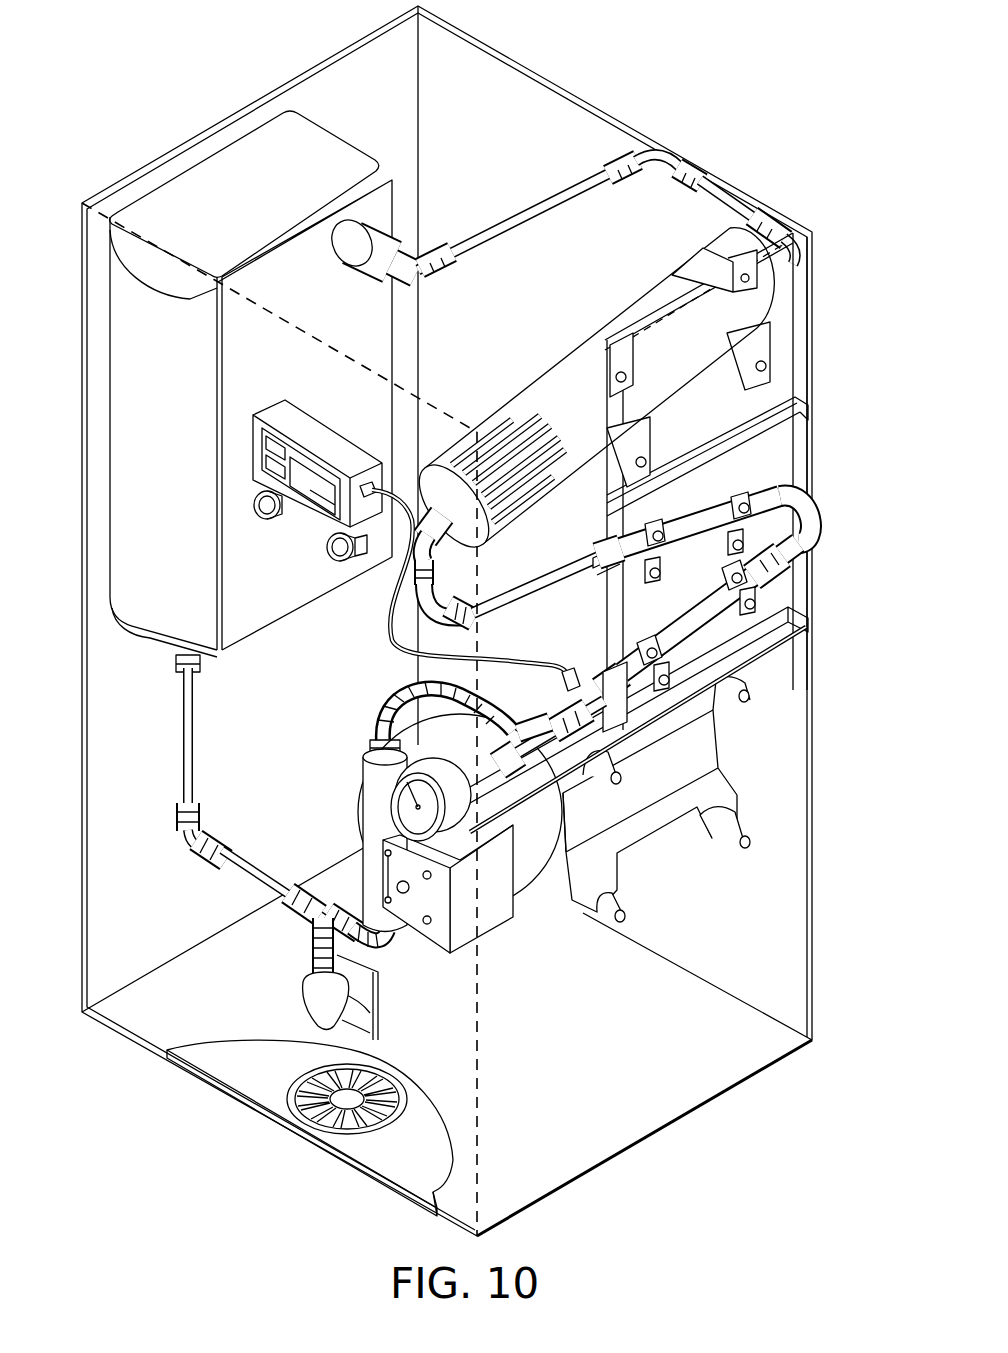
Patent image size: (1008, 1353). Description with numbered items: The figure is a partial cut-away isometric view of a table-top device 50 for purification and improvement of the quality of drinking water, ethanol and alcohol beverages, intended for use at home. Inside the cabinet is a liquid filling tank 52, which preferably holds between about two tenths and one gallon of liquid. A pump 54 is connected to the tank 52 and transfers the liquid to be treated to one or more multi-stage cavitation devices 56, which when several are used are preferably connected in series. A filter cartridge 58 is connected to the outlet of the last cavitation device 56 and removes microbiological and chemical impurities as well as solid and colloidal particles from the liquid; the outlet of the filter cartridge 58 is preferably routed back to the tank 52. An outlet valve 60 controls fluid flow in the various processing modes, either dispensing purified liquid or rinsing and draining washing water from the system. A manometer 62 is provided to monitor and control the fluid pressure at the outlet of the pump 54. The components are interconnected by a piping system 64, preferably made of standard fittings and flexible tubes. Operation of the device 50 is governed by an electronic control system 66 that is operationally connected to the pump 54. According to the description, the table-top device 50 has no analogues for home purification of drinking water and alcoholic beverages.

The table-top device 50 is at (506, 170).
The liquid filling tank 52 is at (133, 385).
The pump 54 is at (554, 815).
The multi-stage cavitation device 56 is at (753, 513).
The filter cartridge 58 is at (560, 417).
The outlet valve 60 is at (317, 1002).
The manometer 62 is at (398, 735).
The piping system 64 is at (716, 200).
The electronic control system 66 is at (328, 428).